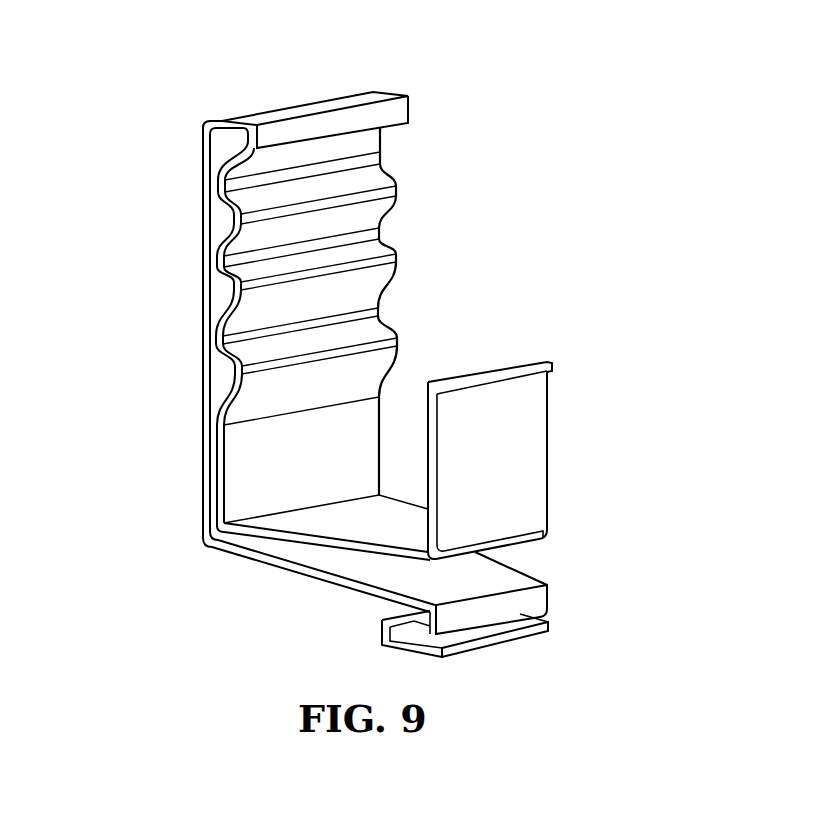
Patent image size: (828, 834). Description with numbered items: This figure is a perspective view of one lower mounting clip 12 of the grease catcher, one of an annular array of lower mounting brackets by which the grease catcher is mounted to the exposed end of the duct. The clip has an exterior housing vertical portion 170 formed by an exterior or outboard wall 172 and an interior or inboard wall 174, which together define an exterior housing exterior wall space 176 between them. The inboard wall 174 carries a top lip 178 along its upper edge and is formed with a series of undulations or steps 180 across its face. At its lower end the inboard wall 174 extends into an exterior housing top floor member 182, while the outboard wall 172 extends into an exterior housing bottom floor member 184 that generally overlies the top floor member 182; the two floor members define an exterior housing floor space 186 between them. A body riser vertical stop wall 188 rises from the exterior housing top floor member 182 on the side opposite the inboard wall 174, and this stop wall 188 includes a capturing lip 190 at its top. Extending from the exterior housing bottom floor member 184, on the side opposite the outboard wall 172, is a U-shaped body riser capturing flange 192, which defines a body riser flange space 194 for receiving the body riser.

The lower mounting clip 12 is at (137, 481).
The exterior housing vertical portion 170 is at (450, 64).
The outboard wall 172 is at (203, 384).
The inboard wall 174 is at (398, 177).
The exterior housing exterior wall space 176 is at (233, 380).
The top lip 178 is at (400, 113).
The undulations 180 is at (397, 260).
The exterior housing top floor member 182 is at (340, 520).
The exterior housing bottom floor member 184 is at (320, 582).
The exterior housing floor space 186 is at (553, 563).
The body riser vertical stop wall 188 is at (522, 428).
The capturing lip 190 is at (541, 360).
The U-shaped body riser capturing flange 192 is at (387, 648).
The body riser flange space 194 is at (562, 622).